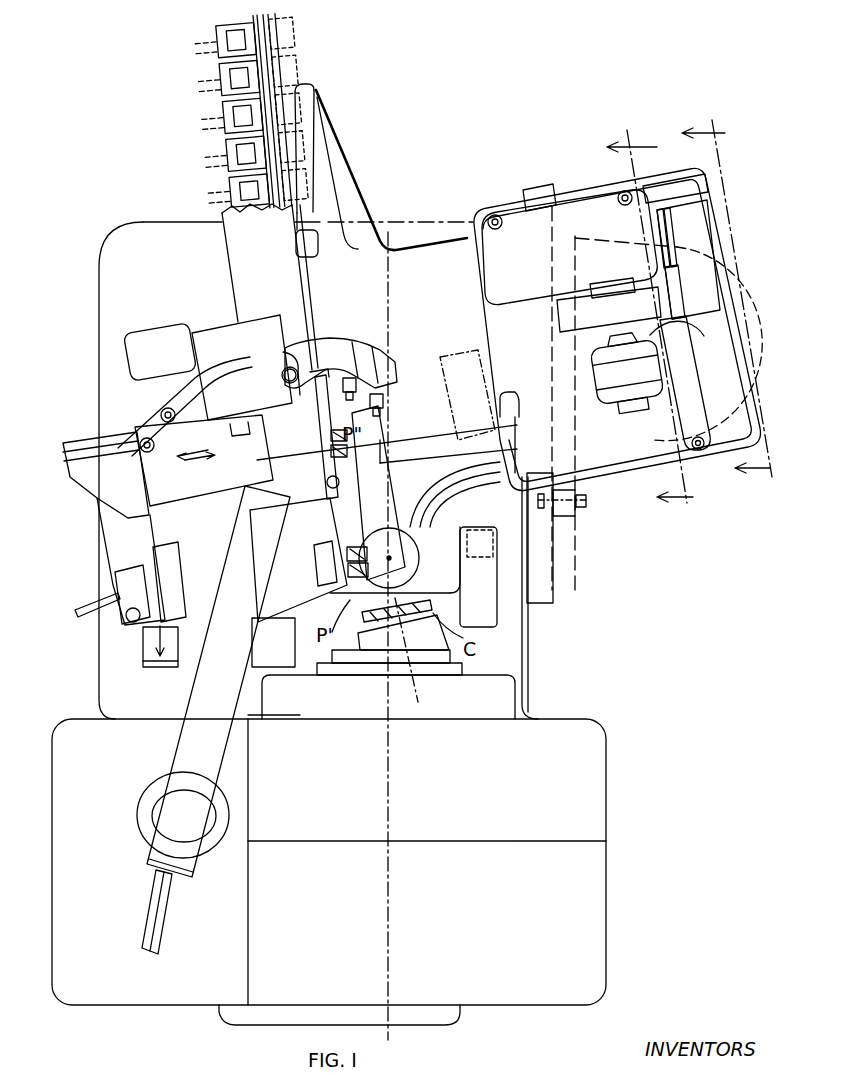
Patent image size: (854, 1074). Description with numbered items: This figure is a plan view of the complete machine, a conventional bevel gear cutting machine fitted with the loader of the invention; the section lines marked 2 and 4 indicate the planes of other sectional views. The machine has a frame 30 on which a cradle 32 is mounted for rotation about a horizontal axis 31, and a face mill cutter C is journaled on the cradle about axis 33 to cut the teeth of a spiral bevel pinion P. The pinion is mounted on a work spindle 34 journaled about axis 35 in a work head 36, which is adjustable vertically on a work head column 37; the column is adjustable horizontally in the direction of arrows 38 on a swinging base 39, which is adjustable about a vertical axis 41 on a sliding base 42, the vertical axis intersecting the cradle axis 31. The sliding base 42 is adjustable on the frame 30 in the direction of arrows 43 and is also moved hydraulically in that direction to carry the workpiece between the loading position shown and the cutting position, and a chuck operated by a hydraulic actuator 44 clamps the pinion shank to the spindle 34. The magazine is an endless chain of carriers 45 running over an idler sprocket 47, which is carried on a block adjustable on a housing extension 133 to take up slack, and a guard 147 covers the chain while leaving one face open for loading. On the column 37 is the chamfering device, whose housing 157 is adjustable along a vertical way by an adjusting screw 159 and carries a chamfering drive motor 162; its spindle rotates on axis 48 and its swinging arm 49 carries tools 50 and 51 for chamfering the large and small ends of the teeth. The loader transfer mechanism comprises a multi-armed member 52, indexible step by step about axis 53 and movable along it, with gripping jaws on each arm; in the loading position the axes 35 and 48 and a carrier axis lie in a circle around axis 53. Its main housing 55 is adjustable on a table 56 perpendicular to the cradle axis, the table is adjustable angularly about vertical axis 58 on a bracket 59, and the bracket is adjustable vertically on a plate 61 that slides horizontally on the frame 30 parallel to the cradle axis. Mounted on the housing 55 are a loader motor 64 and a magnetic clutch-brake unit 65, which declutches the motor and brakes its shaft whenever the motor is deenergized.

The frame 30 is at (123, 683).
The horizontal axis 31 is at (385, 785).
The cradle 32 is at (506, 692).
The axis 33 is at (404, 668).
The work spindle 34 is at (324, 545).
The axis 35 is at (312, 574).
The work head 36 is at (283, 612).
The work head column 37 is at (221, 495).
The arrows 38 is at (184, 460).
The swinging base 39 is at (129, 502).
The vertical axis 41 is at (402, 550).
The sliding base 42 is at (150, 391).
The arrows 43 is at (140, 650).
The hydraulic actuator 44 is at (150, 578).
The carriers 45 is at (240, 150).
The idler sprocket 47 is at (244, 130).
The axis 48 is at (286, 458).
The swinging arm 49 is at (340, 345).
The tool 50 is at (365, 365).
The tool 51 is at (384, 410).
The multi-armed member 52 is at (388, 522).
The axis 53 is at (421, 453).
The main housing 55 is at (517, 346).
The table 56 is at (676, 463).
The vertical axis 58 is at (700, 340).
The bracket 59 is at (680, 248).
The plate 61 is at (563, 508).
The loader motor 64 is at (633, 389).
The magnetic clutch-brake unit 65 is at (646, 306).
The housing extension 133 is at (402, 283).
The guard 147 is at (274, 276).
The housing 157 is at (271, 391).
The adjusting screw 159 is at (328, 483).
The chamfering drive motor 162 is at (176, 366).
The section line 2- 2 is at (721, 301).
The section line 4- 4 is at (643, 319).